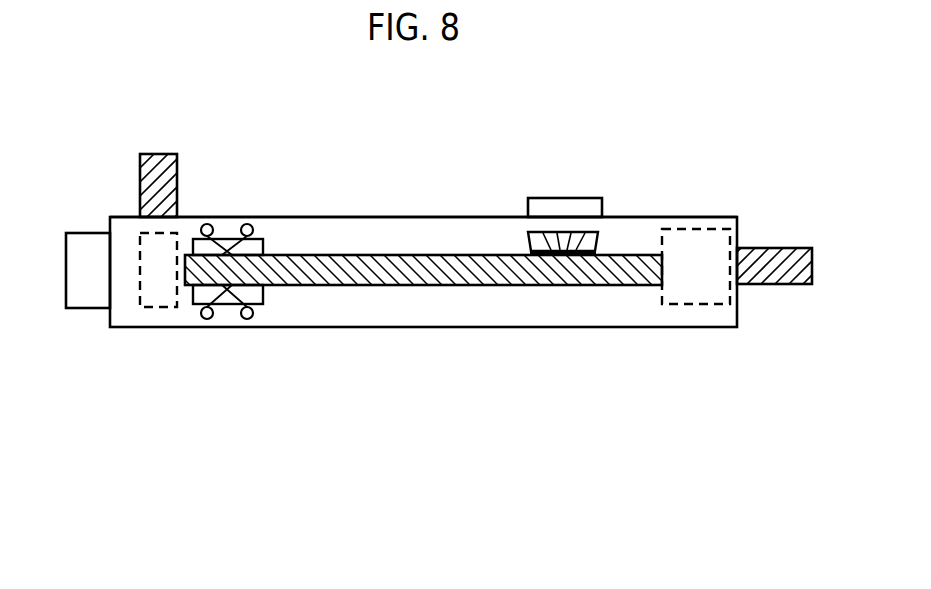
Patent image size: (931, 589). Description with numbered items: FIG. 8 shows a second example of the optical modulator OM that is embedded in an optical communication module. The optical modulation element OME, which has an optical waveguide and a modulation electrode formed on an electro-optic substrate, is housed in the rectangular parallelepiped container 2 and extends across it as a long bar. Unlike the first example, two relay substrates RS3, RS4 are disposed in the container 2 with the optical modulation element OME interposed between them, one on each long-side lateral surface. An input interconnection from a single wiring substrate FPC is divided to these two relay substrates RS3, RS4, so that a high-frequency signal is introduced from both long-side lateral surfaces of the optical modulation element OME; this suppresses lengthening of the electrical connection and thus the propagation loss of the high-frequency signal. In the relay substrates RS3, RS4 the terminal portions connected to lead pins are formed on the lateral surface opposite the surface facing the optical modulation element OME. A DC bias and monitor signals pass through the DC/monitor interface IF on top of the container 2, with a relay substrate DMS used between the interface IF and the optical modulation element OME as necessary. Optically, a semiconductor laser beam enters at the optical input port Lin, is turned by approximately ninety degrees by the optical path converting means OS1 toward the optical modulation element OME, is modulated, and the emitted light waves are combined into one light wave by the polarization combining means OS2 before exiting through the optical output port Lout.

The optical modulator OM is at (573, 344).
The container 2 is at (384, 217).
The wiring substrate FPC is at (92, 308).
The optical input port Lin is at (154, 154).
The optical path converting means OS1 is at (168, 307).
The optical modulation element OME is at (446, 273).
The relay substrate RS3 is at (265, 243).
The relay substrate RS4 is at (265, 299).
The DC/monitor interface IF is at (565, 189).
The relay substrate DMS is at (600, 243).
The polarization combining means OS2 is at (705, 304).
The optical output port Lout is at (777, 248).